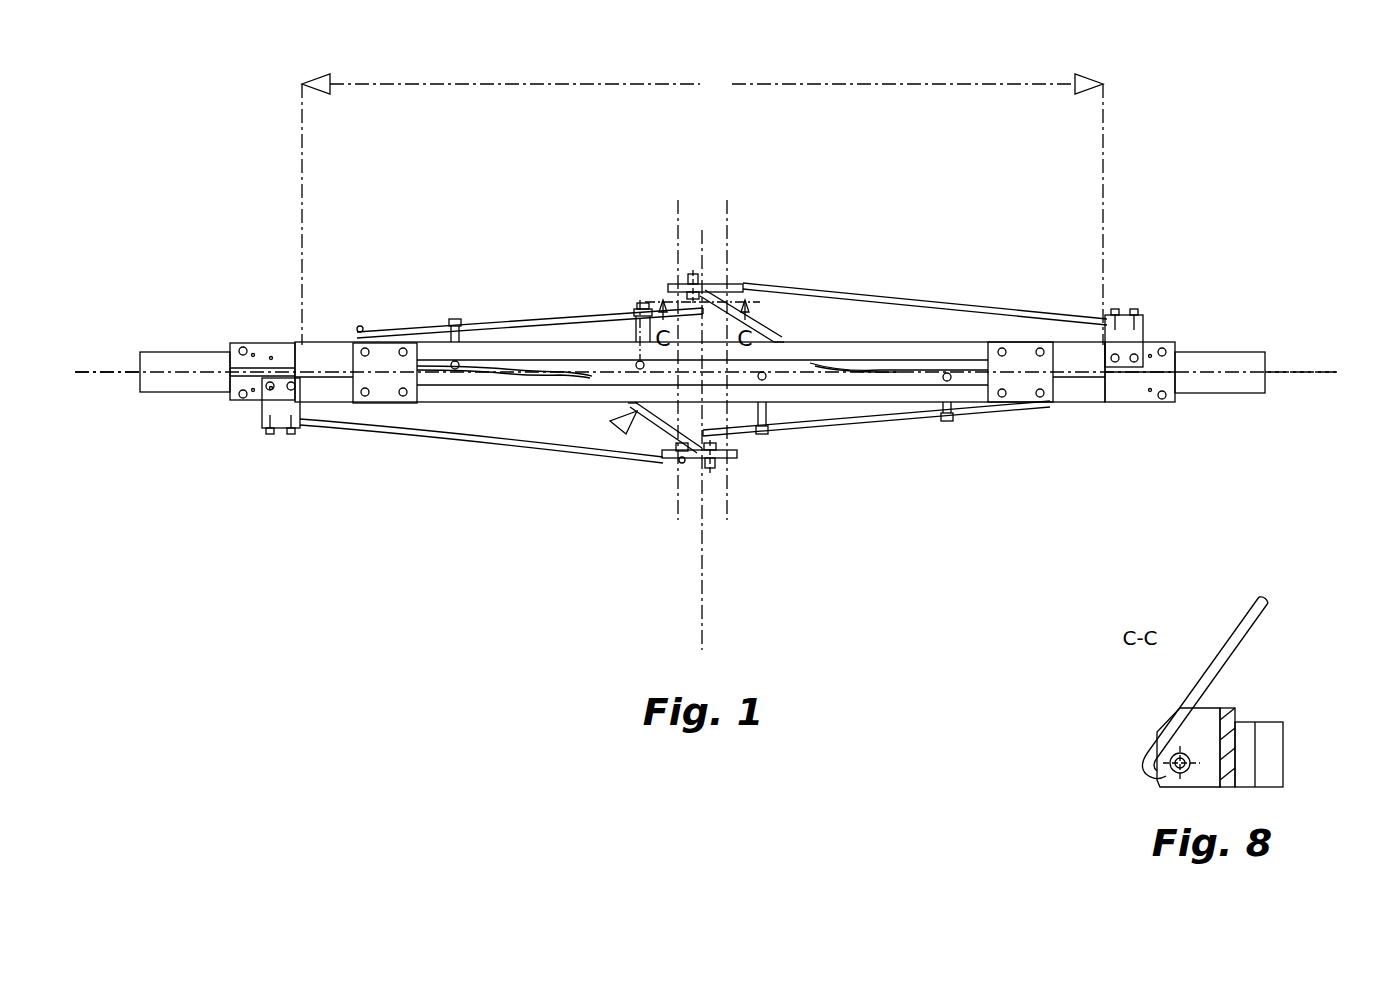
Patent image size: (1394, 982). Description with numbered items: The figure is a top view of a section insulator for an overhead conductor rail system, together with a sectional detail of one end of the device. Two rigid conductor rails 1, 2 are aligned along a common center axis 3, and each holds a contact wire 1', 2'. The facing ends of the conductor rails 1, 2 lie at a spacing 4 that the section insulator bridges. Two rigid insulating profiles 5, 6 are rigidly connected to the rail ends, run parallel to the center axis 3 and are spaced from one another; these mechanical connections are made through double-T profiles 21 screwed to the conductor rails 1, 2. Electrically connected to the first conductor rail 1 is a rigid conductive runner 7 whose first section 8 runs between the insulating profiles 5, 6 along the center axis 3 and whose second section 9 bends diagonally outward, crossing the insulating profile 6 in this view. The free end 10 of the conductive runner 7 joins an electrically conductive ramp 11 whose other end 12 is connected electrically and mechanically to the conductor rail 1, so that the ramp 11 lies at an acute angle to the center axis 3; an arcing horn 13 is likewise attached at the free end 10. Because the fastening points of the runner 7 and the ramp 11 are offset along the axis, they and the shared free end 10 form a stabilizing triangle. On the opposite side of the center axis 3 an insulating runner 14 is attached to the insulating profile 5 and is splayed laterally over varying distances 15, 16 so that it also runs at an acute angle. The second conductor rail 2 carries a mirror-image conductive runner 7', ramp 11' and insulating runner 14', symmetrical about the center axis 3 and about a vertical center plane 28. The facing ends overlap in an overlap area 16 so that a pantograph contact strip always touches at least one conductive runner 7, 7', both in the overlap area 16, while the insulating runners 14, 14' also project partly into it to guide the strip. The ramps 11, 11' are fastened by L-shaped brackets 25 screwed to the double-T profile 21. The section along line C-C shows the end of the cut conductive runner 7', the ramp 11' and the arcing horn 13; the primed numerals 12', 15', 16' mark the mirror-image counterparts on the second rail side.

In FIG. 1, the conductor rail 1 is at (185, 266).
In FIG. 1, the contact wire 1' is at (107, 256).
In FIG. 1, the conductor rail 2 is at (1220, 266).
In FIG. 1, the contact wire 2' is at (1301, 256).
In FIG. 1, the center axis 3 is at (1333, 370).
In FIG. 1, the spacing 4 is at (702, 205).
In FIG. 1, the insulating profile 5 is at (963, 348).
In FIG. 1, the insulating profile 6 is at (897, 392).
In FIG. 1, the conductive runner 7 is at (620, 500).
In FIG. 1, the conductive runner 7' is at (749, 241).
In FIG. 8, the conductive runner 7' is at (1123, 802).
In FIG. 1, the first section 8 is at (483, 403).
In FIG. 1, the second section 9 is at (683, 437).
In FIG. 1, the free end 10 is at (720, 457).
In FIG. 1, the ramp 11 is at (481, 508).
In FIG. 1, the ramp 11' is at (925, 232).
In FIG. 8, the ramp 11' is at (1275, 747).
In FIG. 1, the other end 12 is at (235, 470).
In FIG. 1, the right end block 12' is at (1157, 271).
In FIG. 1, the arcing horn 13 is at (737, 287).
In FIG. 8, the arcing horn 13 is at (1243, 632).
In FIG. 1, the insulating runner 14 is at (530, 239).
In FIG. 1, the insulating runner 14' is at (881, 499).
In FIG. 1, the distance 15 is at (457, 254).
In FIG. 1, the lower post 15' is at (804, 484).
In FIG. 1, the overlap area 16 is at (691, 330).
In FIG. 1, the lower spacing post 16' is at (965, 485).
In FIG. 1, the double-T profile 21 is at (383, 358).
In FIG. 1, the L-shaped bracket 25 is at (286, 430).
In FIG. 1, the center plane 28 is at (708, 633).